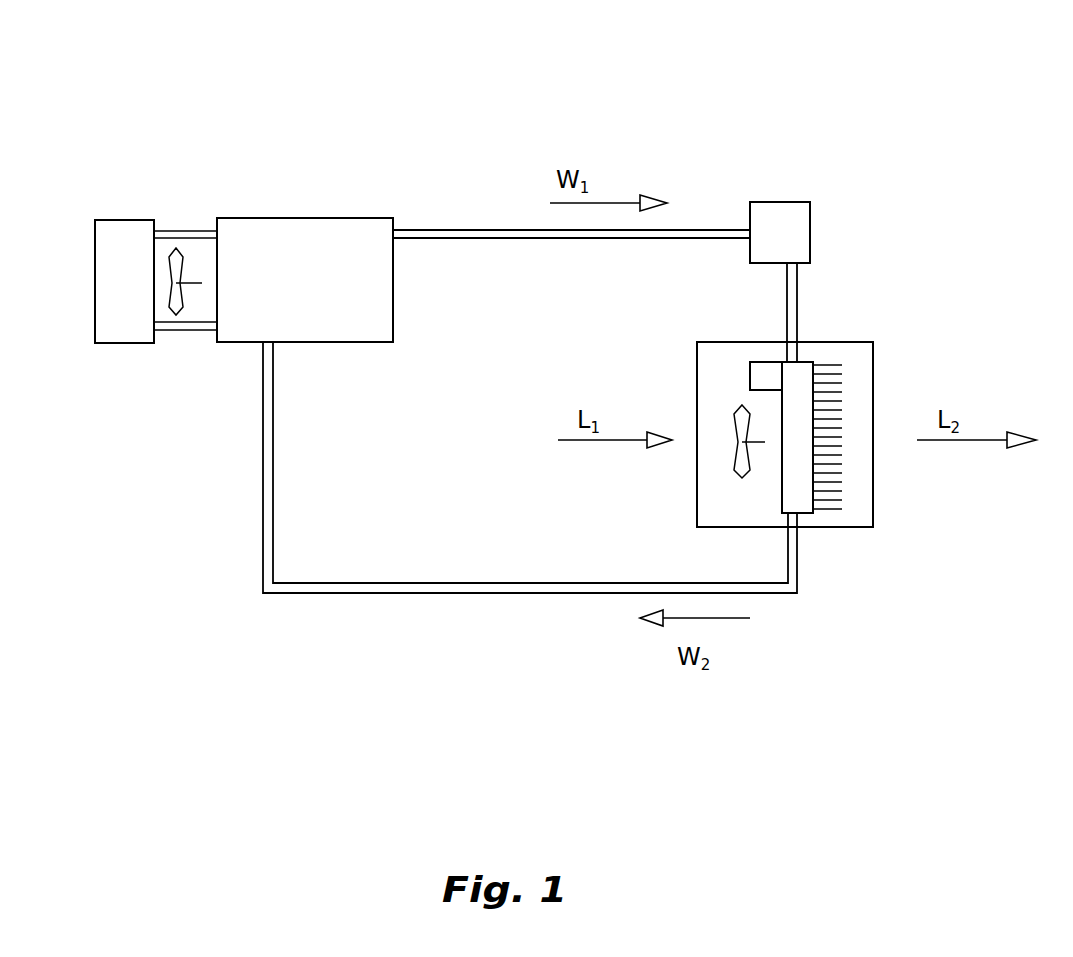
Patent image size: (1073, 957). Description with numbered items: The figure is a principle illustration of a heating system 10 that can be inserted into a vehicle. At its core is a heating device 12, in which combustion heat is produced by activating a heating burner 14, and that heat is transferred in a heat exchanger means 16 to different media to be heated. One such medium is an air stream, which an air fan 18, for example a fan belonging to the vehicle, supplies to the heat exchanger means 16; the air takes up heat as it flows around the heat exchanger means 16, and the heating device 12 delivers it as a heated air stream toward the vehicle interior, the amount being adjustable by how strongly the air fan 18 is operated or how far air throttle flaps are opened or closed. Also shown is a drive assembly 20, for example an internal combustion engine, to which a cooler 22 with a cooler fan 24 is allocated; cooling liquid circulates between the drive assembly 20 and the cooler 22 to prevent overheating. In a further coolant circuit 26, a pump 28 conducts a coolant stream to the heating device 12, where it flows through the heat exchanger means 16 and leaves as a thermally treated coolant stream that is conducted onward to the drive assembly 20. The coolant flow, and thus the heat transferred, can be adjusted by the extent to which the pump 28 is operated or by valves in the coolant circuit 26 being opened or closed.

The heating system 10 is at (873, 92).
The heating device 12 is at (860, 338).
The heating burner 14 is at (762, 377).
The heat exchanger means 16 is at (860, 487).
The air fan 18 is at (733, 458).
The drive assembly 20 is at (298, 218).
The cooler 22 is at (110, 218).
The cooler fan 24 is at (187, 303).
The coolant circuit 26 is at (470, 230).
The pump 28 is at (800, 200).